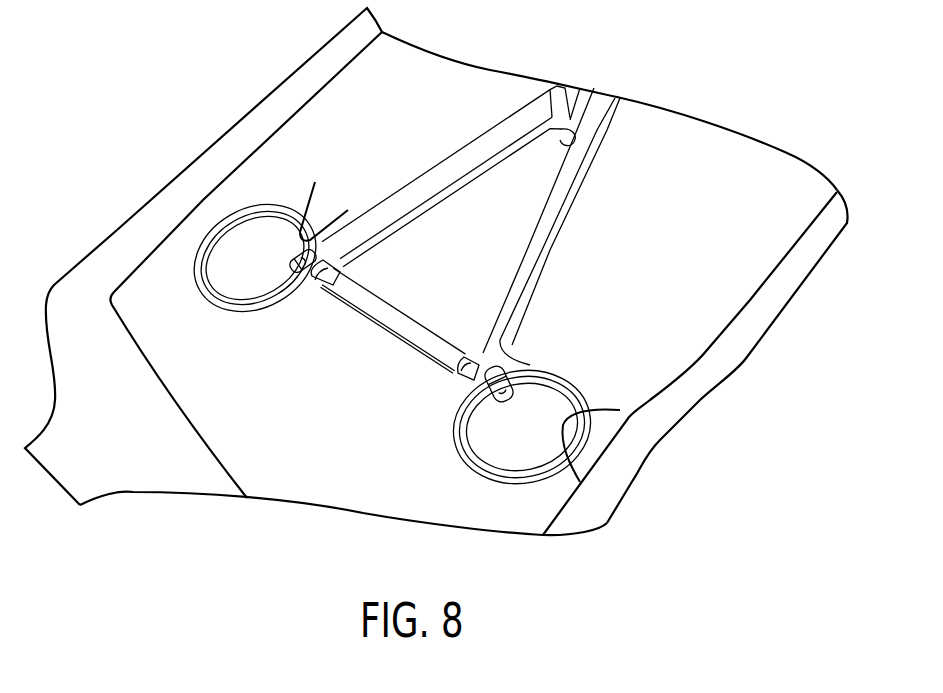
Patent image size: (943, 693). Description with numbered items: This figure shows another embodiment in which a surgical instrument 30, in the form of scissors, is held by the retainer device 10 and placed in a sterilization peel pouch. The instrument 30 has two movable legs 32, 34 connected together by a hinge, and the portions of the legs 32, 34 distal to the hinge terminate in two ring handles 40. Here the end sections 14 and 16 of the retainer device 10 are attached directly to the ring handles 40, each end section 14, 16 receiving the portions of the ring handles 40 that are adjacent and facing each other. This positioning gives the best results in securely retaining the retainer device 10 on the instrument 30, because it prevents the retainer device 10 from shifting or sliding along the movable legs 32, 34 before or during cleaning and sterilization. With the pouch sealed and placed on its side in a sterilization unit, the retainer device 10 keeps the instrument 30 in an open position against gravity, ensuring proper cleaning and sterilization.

The retainer device 10 is at (392, 323).
The end section 14 is at (308, 252).
The end section 16 is at (497, 380).
The surgical instrument 30 is at (625, 303).
The movable leg 32 is at (411, 195).
The movable leg 34 is at (565, 200).
The ring handle 40 is at (183, 228).